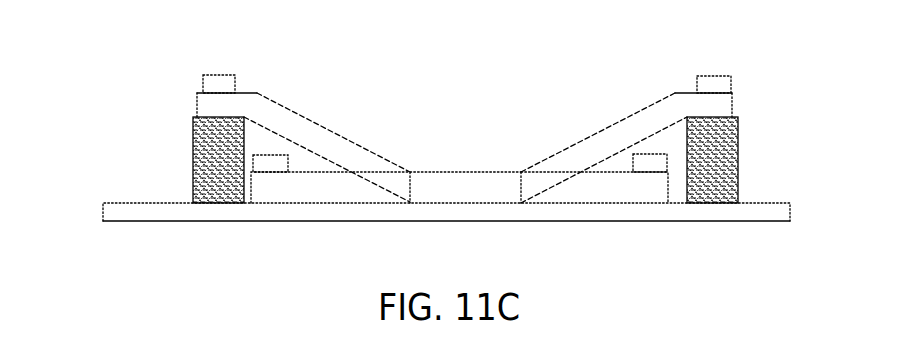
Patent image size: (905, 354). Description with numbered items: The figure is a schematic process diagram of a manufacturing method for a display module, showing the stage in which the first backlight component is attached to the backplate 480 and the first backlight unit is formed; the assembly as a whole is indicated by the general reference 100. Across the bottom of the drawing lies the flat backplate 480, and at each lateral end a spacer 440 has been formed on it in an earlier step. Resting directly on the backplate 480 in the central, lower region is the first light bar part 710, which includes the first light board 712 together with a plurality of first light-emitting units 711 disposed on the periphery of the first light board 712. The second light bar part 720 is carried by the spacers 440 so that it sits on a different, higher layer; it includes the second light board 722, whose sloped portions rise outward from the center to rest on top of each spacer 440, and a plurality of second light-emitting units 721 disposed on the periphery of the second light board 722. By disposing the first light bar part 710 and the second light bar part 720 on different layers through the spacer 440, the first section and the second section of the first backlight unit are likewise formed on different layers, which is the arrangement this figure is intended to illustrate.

The display device / assembly 100 is at (128, 37).
The spacer 440 is at (738, 175).
The backplate 480 is at (208, 222).
The first light bar part 710 is at (115, 130).
The first light-emitting units 711 is at (258, 165).
The first light board 712 is at (258, 186).
The second light bar part 720 is at (115, 52).
The second light-emitting units 721 is at (202, 83).
The second light board 722 is at (197, 106).